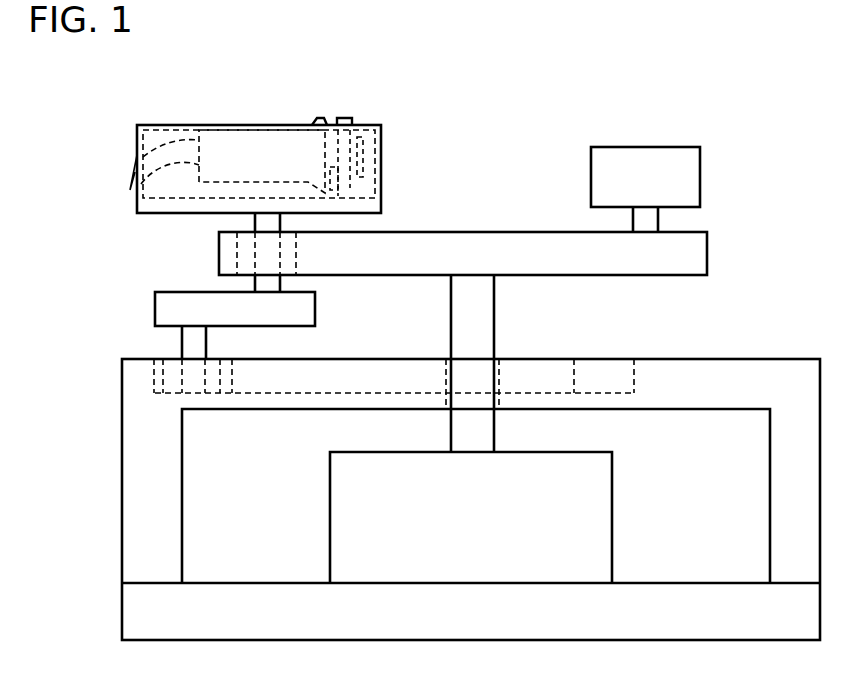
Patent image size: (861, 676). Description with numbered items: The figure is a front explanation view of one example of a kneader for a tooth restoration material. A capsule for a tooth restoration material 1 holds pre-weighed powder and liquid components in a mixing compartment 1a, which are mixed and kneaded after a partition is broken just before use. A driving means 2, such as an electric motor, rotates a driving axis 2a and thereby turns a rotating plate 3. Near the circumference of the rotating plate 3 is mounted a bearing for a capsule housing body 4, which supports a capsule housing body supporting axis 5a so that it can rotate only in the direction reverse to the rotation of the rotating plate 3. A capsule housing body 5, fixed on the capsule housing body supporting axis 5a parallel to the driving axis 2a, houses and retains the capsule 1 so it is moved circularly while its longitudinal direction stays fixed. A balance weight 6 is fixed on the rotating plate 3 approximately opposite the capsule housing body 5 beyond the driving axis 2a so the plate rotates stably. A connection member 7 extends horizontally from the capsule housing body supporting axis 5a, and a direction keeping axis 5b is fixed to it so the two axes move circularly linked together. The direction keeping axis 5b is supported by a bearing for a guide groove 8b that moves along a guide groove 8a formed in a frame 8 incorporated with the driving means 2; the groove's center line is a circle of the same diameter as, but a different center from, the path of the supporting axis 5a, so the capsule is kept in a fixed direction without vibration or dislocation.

The capsule for a tooth restoration material 1 is at (345, 117).
The mixing compartment 1a is at (258, 142).
The driving means 2 is at (358, 507).
The driving axis 2a is at (472, 427).
The rotating plate 3 is at (445, 246).
The bearing for a capsule housing body 4 is at (290, 255).
The capsule housing body 5 is at (161, 136).
The capsule housing body supporting axis 5a is at (263, 222).
The direction keeping axis 5b is at (188, 337).
The balance weight 6 is at (647, 168).
The connection member 7 is at (165, 306).
The frame 8 is at (143, 485).
The guide groove 8a is at (611, 372).
The bearing for a guide groove 8b is at (172, 373).